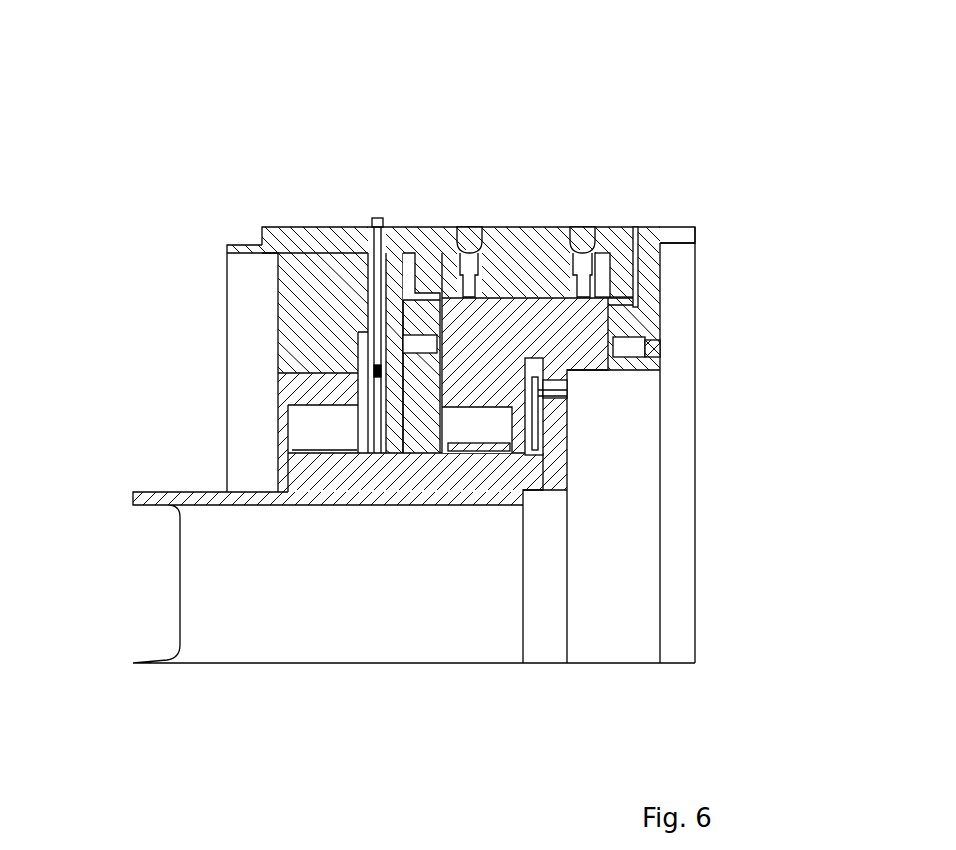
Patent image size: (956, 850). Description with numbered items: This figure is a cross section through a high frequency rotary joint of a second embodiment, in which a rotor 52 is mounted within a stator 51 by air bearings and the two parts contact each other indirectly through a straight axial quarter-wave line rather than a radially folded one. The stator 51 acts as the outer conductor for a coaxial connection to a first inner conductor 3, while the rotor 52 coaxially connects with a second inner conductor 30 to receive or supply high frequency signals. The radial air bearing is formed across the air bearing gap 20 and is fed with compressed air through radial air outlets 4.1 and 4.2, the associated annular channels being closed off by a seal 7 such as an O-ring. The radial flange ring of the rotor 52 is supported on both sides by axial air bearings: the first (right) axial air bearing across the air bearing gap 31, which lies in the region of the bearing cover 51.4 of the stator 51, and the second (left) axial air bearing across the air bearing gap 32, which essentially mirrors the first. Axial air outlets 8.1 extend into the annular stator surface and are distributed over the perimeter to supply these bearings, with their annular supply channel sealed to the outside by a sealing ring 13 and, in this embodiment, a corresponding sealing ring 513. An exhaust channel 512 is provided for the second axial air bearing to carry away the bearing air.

The first inner conductor 3 is at (380, 218).
The sealing ring 513 is at (415, 250).
The radial air outlet 4.1 is at (472, 296).
The seal 7 is at (470, 227).
The air bearing gap 20 is at (523, 298).
The radial air outlet 4.2 is at (582, 298).
The exhaust channel 512 is at (640, 240).
The stator 51 is at (318, 298).
The bearing cover 51.4 is at (656, 283).
The air bearing gap 31 is at (617, 316).
The sealing ring 13 is at (648, 341).
The air bearing gap 32 is at (442, 320).
The axial air outlet 8.1 is at (437, 347).
The rotor 52 is at (335, 485).
The second inner conductor 30 is at (567, 393).